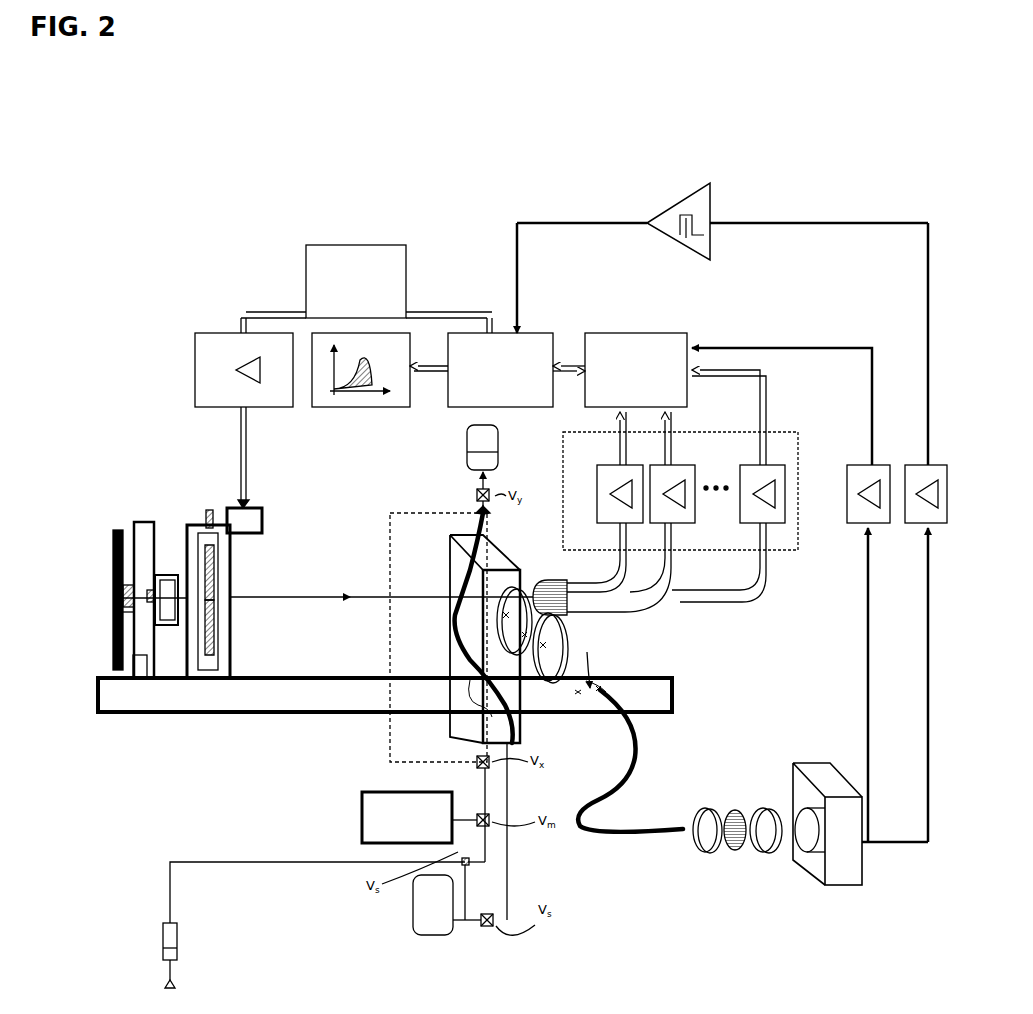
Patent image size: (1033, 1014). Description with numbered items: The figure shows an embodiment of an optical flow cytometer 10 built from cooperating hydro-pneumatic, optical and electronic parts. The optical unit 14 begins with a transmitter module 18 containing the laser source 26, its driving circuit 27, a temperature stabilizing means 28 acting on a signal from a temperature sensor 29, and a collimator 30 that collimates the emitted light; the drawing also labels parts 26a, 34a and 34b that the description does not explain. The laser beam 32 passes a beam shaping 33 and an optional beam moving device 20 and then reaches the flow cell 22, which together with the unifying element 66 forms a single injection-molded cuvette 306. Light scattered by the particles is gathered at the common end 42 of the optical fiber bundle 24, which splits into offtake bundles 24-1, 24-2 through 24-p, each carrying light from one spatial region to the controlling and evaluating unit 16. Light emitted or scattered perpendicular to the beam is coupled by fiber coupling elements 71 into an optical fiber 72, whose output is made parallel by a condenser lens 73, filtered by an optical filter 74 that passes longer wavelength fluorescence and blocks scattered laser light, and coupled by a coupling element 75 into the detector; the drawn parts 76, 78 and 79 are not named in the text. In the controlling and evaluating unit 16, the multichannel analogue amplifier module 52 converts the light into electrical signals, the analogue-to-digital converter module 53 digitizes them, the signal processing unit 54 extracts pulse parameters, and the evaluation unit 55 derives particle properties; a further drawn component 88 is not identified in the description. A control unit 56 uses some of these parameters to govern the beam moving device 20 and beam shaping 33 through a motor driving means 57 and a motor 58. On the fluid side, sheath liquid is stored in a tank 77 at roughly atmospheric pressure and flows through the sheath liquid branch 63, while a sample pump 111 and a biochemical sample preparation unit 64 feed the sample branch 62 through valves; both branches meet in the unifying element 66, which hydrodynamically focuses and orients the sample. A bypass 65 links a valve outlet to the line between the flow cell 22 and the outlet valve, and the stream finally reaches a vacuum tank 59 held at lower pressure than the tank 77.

The flow cytometer 10 is at (108, 270).
The optical unit 14 is at (122, 474).
The controlling and evaluating unit 16 is at (566, 300).
The transmitter module 18 is at (113, 532).
The beam moving device 20 is at (207, 510).
The flow cell 22 is at (450, 568).
The optical fiber bundle 24 is at (587, 618).
The offtake bundle 24-1 is at (618, 570).
The offtake bundle 24-2 is at (678, 570).
The offtake bundle 24-p is at (712, 604).
The laser source 26 is at (128, 598).
The lens mount 26a is at (130, 620).
The driving circuit 27 is at (113, 556).
The temperature stabilizing means 28 is at (133, 668).
The temperature sensor 29 is at (146, 522).
The collimator means 30 is at (166, 575).
The laser beam 32 is at (328, 597).
The beam shaping 33 is at (204, 524).
The modulator crystal upper part 34a is at (218, 562).
The modulator crystal lower part 34b is at (218, 638).
The common end of optical fiber bundle 42 is at (652, 890).
The analogue amplifier module 52 is at (716, 436).
The analogue-to-digital converter module 53 is at (620, 370).
The signal processing unit 54 is at (479, 359).
The evaluation unit 55 is at (355, 407).
The control unit 56 is at (356, 281).
The motor driving means 57 is at (208, 333).
The motor 58 is at (262, 520).
The vacuum tank 59 is at (467, 438).
The sample branch 62 is at (485, 775).
The sheath liquid branch 63 is at (510, 866).
The sample preparation unit 64 is at (362, 825).
The bypass 65 is at (390, 634).
The unifying element 66 is at (528, 718).
The fiber coupling elements 71 is at (600, 665).
The optical fiber 72 is at (640, 740).
The condenser lens 73 is at (706, 808).
The optical filter 74 is at (735, 852).
The coupling element 75 is at (766, 808).
The camera 76 is at (826, 776).
The tank 77 is at (404, 905).
The first amplifier 78 is at (852, 526).
The second amplifier 79 is at (922, 526).
The comparator 88 is at (702, 243).
The sample pump 111 is at (178, 956).
The cuvette 306 is at (466, 720).